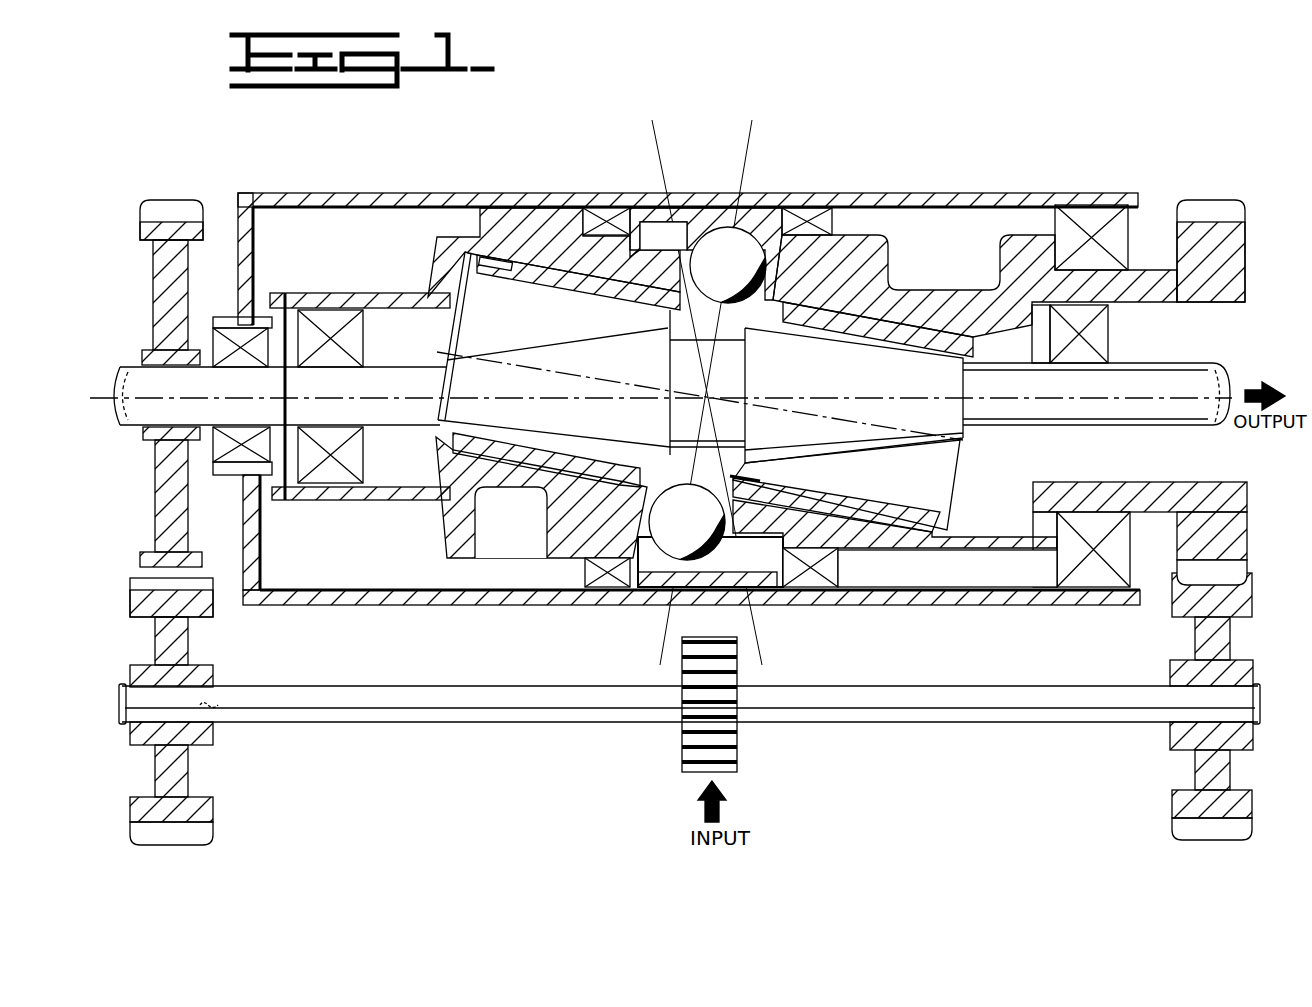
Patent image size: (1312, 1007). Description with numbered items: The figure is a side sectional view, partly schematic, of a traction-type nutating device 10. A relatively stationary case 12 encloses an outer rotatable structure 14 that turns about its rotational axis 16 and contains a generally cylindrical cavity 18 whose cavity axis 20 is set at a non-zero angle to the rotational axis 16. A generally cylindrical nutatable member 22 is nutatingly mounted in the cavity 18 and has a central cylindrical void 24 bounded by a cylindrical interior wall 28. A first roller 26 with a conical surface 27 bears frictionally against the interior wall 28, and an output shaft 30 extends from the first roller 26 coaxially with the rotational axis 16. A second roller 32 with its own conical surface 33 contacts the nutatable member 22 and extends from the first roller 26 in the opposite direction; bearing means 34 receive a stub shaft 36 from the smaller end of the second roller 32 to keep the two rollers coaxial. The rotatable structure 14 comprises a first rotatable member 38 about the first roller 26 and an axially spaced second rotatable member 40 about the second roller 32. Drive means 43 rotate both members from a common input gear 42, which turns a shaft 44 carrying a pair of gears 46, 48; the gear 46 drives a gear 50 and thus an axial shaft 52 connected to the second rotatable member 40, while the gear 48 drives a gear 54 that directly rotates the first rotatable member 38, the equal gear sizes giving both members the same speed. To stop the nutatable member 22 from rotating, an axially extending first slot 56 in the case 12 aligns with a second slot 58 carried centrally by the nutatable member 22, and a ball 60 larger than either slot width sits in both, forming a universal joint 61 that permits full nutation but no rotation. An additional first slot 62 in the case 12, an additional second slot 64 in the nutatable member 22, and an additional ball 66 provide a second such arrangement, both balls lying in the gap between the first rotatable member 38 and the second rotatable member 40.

The nutating device 10 is at (1196, 182).
The case 12 is at (1100, 188).
The outer rotatable structure 14 is at (432, 242).
The rotational axis 16 is at (1133, 395).
The cylindrical cavity 18 is at (523, 465).
The cavity axis 20 is at (985, 437).
The nutatable member 22 is at (553, 255).
The cylindrical void 24 is at (846, 485).
The first roller 26 is at (854, 395).
The conical surface 27 is at (852, 352).
The interior wall 28 is at (866, 490).
The output shaft 30 is at (1183, 365).
The second roller 32 is at (591, 353).
The conical surface 33 is at (608, 355).
The bearing means 34 is at (358, 337).
The stub shaft 36 is at (360, 396).
The first rotatable member 38 is at (1032, 235).
The second rotatable member 40 is at (472, 236).
The input gear 42 is at (737, 772).
The drive means 43 is at (464, 736).
The shaft 44 is at (905, 725).
The gear 46 is at (190, 642).
The gear 48 is at (1193, 636).
The gear 50 is at (157, 507).
The axial shaft 52 is at (145, 430).
The gear 54 is at (1247, 492).
The first slot 56 is at (688, 232).
The second slot 58 is at (774, 325).
The ball 60 is at (728, 265).
The universal joint 61 is at (763, 225).
The additional first slot 62 is at (655, 572).
The additional second slot 64 is at (727, 479).
The additional ball 66 is at (687, 522).